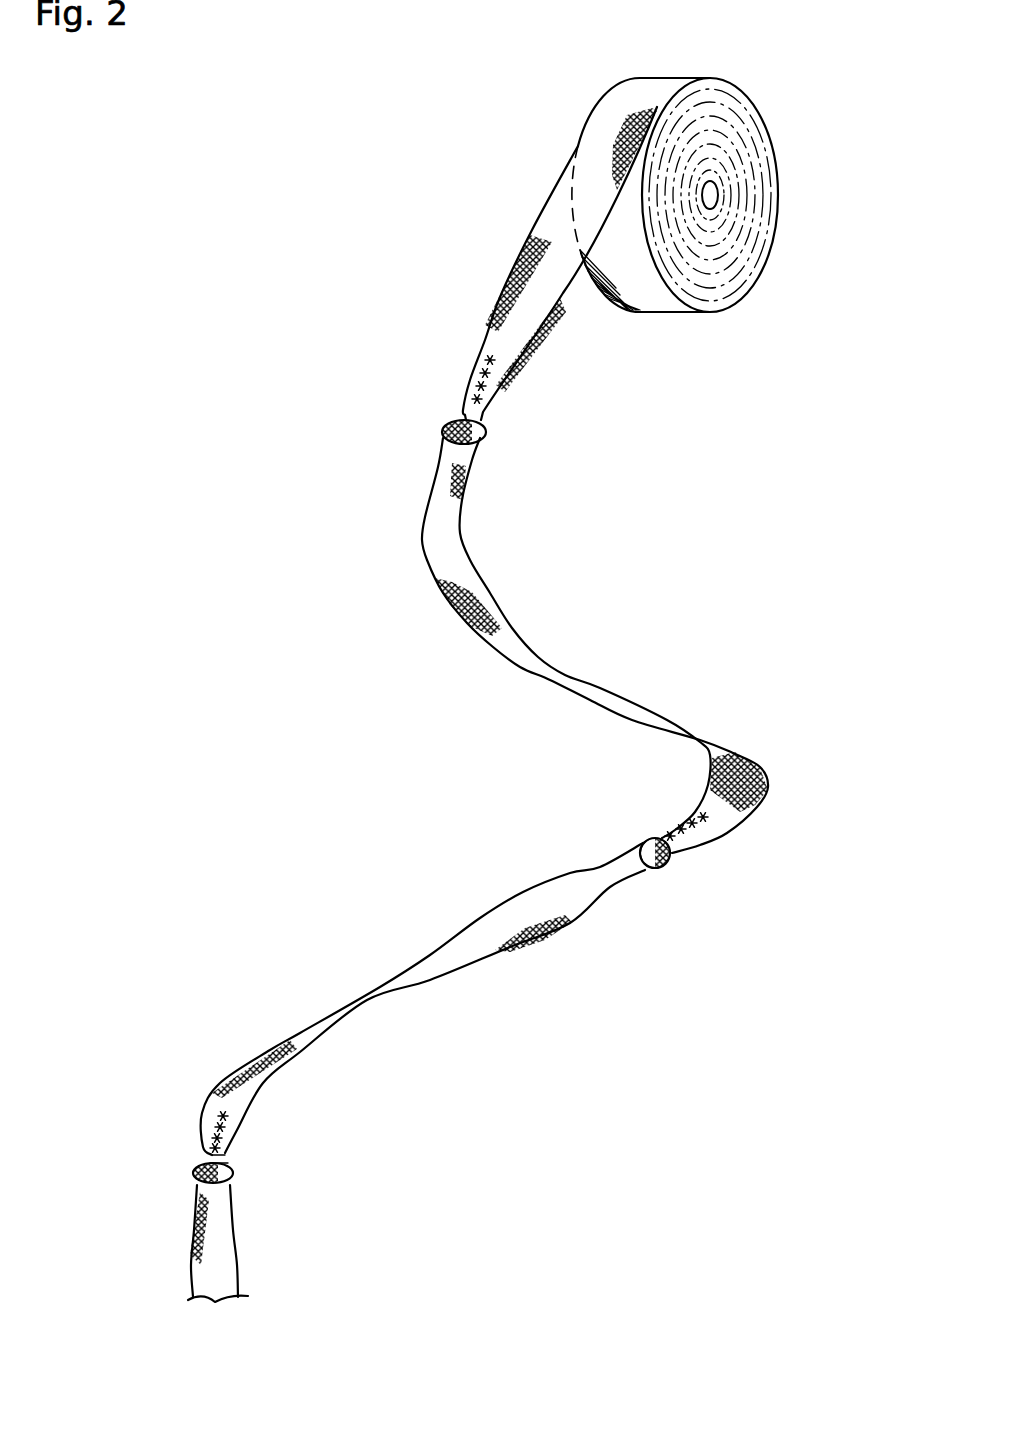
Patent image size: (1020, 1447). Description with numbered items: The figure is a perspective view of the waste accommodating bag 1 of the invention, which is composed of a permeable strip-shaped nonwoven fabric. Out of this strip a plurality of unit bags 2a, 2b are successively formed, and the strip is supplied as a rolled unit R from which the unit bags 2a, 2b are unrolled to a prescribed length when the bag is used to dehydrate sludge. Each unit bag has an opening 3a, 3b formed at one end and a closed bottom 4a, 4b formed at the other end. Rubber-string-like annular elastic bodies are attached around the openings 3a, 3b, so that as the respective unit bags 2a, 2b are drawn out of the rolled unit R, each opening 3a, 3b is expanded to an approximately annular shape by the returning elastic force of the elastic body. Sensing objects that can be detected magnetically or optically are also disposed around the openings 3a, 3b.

The rolled unit R is at (791, 181).
The waste accommodating bag 1 is at (443, 303).
The unit bag 2a is at (515, 645).
The unit bag 2b is at (382, 995).
The opening 3a is at (485, 434).
The opening 3b is at (670, 860).
The closed bottom 4a is at (690, 812).
The closed bottom 4b is at (232, 1145).